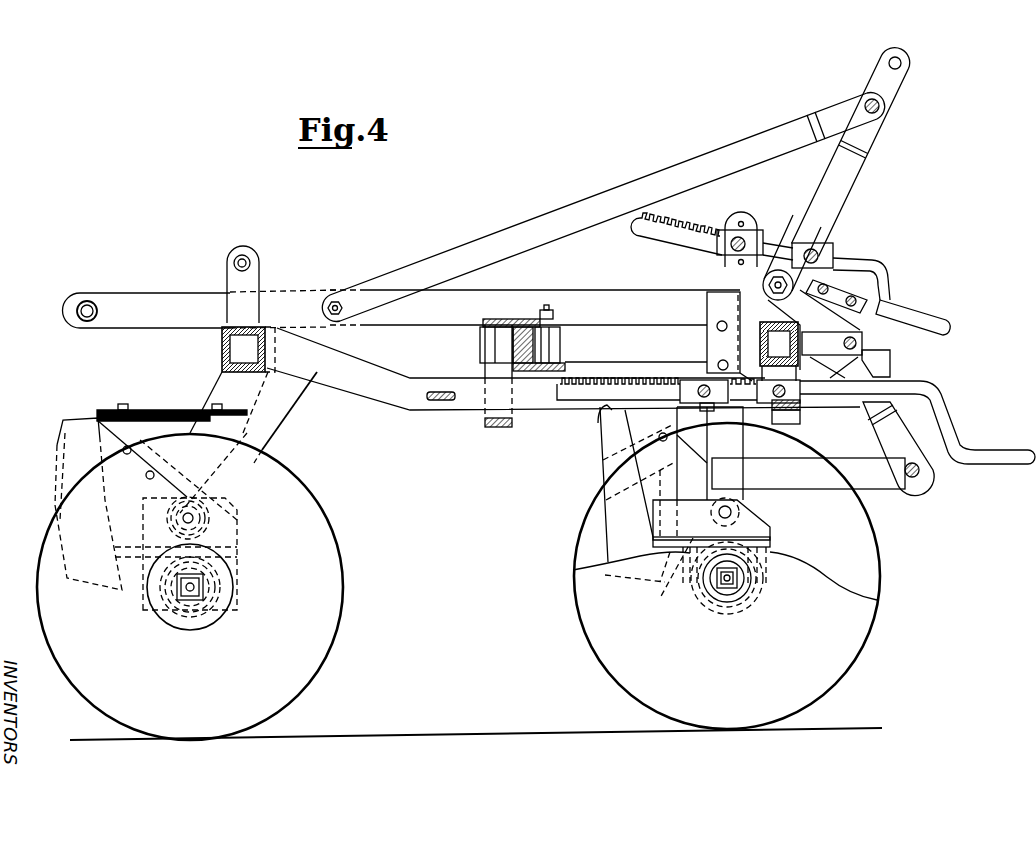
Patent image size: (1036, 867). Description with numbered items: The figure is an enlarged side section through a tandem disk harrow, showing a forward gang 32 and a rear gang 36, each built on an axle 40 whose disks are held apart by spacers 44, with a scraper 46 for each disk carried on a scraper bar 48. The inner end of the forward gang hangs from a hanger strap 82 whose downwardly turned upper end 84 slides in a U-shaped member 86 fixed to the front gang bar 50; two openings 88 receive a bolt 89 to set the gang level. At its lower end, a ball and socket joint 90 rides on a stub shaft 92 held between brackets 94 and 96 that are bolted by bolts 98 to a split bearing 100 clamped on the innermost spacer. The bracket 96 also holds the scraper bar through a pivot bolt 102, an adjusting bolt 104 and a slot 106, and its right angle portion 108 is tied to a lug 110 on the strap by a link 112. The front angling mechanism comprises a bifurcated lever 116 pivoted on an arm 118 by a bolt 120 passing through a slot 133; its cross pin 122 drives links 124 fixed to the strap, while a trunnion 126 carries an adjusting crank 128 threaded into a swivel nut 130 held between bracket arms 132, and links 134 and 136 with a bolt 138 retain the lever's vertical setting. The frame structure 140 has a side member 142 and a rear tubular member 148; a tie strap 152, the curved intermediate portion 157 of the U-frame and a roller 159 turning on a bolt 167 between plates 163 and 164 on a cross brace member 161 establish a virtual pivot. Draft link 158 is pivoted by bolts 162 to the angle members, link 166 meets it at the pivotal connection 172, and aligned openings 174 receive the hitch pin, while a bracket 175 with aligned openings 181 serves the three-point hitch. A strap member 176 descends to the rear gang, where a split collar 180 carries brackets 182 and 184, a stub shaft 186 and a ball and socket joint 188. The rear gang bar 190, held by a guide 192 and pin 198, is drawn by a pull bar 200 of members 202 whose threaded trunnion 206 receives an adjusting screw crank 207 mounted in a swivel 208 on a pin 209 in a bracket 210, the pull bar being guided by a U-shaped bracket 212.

The forward gang 32 is at (867, 567).
The rear gang 36 is at (310, 585).
The axle 40 is at (725, 590).
The spacer 44 is at (742, 598).
The scraper 46 is at (627, 583).
The scraper bar 48 is at (602, 430).
The front gang bar 50 is at (790, 355).
The hanger strap 82 is at (742, 441).
The downwardly turned upper end 84 is at (713, 303).
The U-shaped member 86 is at (644, 323).
The openings 88 is at (716, 328).
The bolt 89 is at (716, 363).
The ball and socket joint 90 is at (732, 512).
The stub shaft 92 is at (733, 510).
The bracket 94 is at (680, 480).
The bracket 96 is at (693, 461).
The bolts 98 is at (692, 543).
The split bearing 100 is at (770, 552).
The pivot bolt 102 is at (602, 465).
The adjusting bolt 104 is at (640, 488).
The slot 106 is at (717, 463).
The right angle portion 108 is at (602, 448).
The lug 110 is at (775, 403).
The link 112 is at (691, 405).
The bifurcated lever 116 is at (882, 442).
The arm 118 is at (882, 368).
The bolt 120 is at (846, 343).
The cross pin 122 is at (923, 482).
The links 124 is at (883, 488).
The trunnion 126 is at (837, 250).
The adjusting crank 128 is at (932, 312).
The swivel nut 130 is at (733, 217).
The bracket arms 132 is at (757, 226).
The slot 133 is at (834, 370).
The link 134 is at (883, 303).
The link 136 is at (863, 278).
The bolt 138 is at (857, 270).
The frame structure 140 is at (452, 317).
The side member 142 is at (628, 287).
The tubular member 148 is at (100, 311).
The tie strap 152 is at (800, 312).
The curved intermediate portion 157 is at (513, 368).
The draft link 158 is at (868, 170).
The roller 159 is at (560, 347).
The cross brace member 161 is at (513, 343).
The bolts 162 is at (787, 272).
The plate 163 is at (523, 319).
The plate / angle members 164 is at (527, 372).
The link 166 is at (517, 227).
The bolt 167 is at (553, 312).
The pivotal connection 172 is at (880, 108).
The aligned openings 174 is at (902, 63).
The bracket 175 is at (900, 345).
The strap member 176 is at (272, 435).
The split collar 180 is at (237, 604).
The aligned openings 181 is at (910, 284).
The bracket 182 is at (237, 522).
The bracket 184 is at (110, 512).
The stub shaft 186 is at (183, 525).
The ball and socket joint 188 is at (207, 528).
The rear gang bar 190 is at (258, 361).
The guide 192 is at (263, 278).
The pin 198 is at (253, 257).
The pull bar 200 is at (373, 383).
The pull bar member 202 is at (428, 377).
The threaded trunnion 206 is at (712, 410).
The adjusting screw crank 207 is at (977, 440).
The swivel 208 is at (800, 402).
The pin 209 is at (800, 413).
The bracket 210 is at (792, 425).
The U-shaped bracket 212 is at (497, 427).